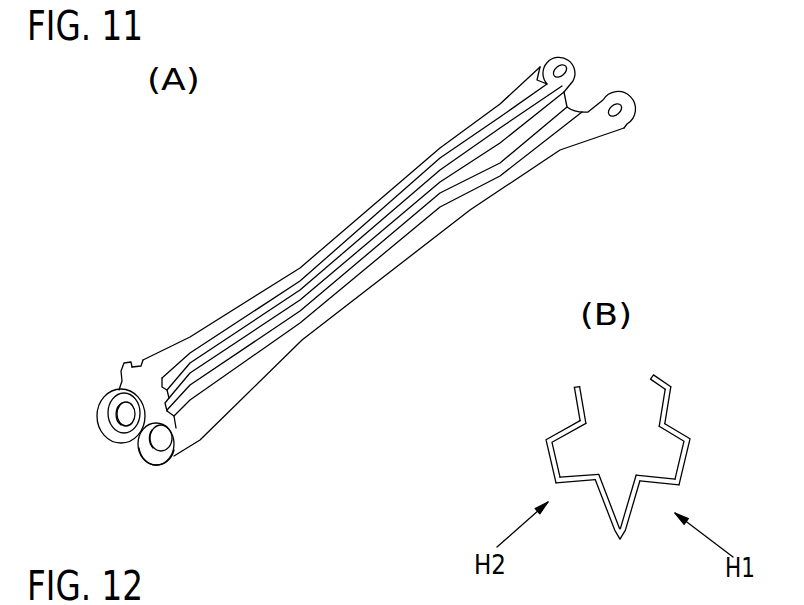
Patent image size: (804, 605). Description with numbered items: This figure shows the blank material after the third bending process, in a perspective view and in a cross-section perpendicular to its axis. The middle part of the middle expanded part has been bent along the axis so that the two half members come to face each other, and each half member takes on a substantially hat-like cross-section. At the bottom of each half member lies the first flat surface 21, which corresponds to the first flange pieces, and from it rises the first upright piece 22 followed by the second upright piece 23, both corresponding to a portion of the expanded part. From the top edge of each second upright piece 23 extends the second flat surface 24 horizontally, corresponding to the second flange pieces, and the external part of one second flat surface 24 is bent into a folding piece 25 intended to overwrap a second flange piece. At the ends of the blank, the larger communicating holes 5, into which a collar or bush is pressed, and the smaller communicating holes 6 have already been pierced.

The communicating hole 5 is at (124, 422).
The communicating hole 6 is at (566, 68).
The first flat surface 21 is at (602, 507).
The first upright piece 22 is at (578, 483).
The second upright piece 23 is at (130, 363).
The second flat surface 24 is at (141, 358).
The folding piece 25 is at (185, 372).